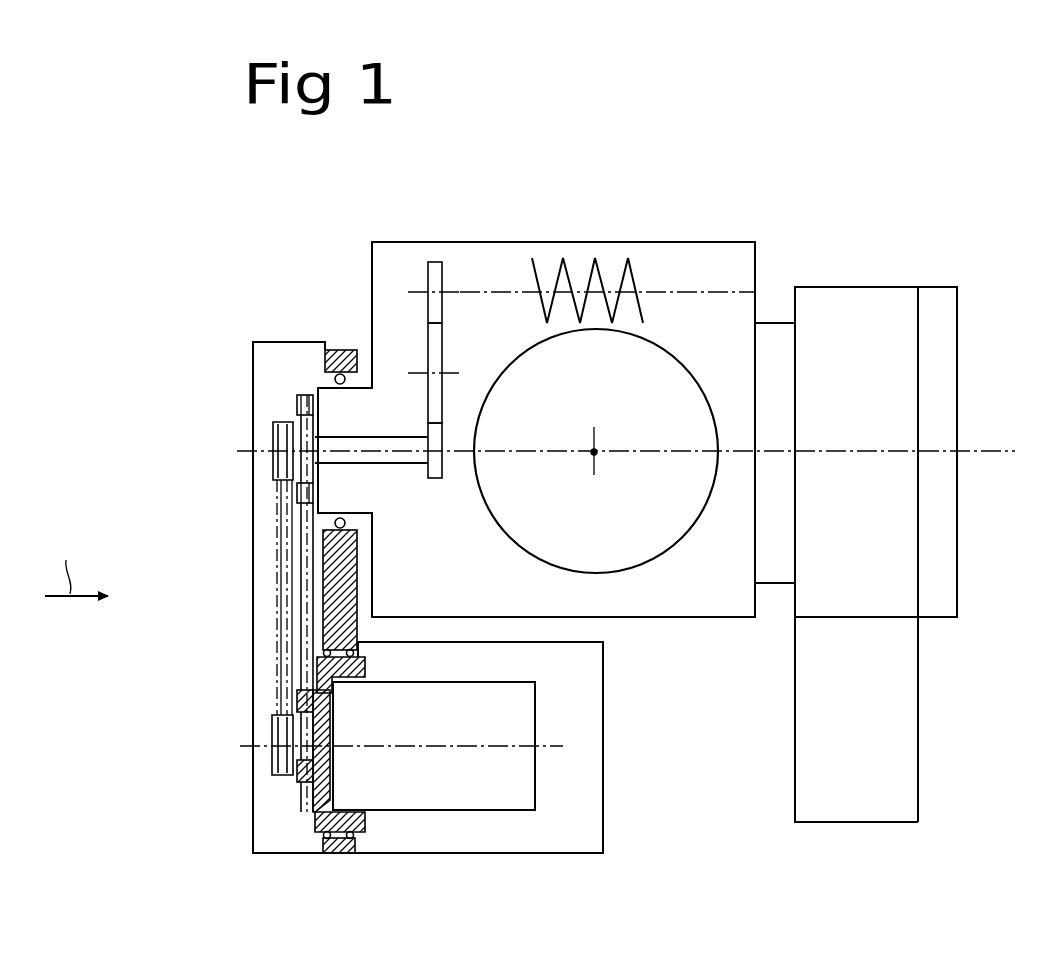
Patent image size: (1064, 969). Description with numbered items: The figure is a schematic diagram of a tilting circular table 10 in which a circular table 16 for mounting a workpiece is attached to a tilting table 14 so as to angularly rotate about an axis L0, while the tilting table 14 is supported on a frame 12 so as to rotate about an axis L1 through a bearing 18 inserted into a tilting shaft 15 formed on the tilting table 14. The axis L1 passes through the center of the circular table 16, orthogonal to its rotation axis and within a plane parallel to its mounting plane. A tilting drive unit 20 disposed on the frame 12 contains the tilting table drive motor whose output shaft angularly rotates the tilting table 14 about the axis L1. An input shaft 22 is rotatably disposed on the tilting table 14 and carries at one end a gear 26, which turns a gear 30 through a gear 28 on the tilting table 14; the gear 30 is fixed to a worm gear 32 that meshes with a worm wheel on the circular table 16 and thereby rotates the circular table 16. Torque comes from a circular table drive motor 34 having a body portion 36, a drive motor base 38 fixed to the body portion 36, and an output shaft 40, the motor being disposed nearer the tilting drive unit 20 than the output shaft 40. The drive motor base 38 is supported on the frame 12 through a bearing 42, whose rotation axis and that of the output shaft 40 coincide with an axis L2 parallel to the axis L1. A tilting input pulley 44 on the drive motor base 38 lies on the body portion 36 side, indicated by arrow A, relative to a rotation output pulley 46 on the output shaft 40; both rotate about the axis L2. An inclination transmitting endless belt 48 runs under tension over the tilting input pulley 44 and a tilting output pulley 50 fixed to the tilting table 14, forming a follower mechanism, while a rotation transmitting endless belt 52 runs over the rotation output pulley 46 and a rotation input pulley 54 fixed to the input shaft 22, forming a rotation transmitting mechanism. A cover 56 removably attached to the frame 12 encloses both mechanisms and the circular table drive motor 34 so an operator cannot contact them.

The tilting circular table 10 is at (543, 188).
The frame 12 is at (337, 349).
The tilting table 14 is at (711, 619).
The tilting shaft 15 is at (297, 407).
The circular table 16 is at (672, 350).
The bearing 18 is at (334, 378).
The tilting drive unit 20 is at (858, 287).
The input shaft 22 is at (395, 466).
The gear 26 is at (437, 480).
The gear 28 is at (441, 343).
The gear 30 is at (434, 262).
The worm gear 32 is at (600, 256).
The circular table drive motor 34 is at (428, 814).
The body portion 36 is at (497, 800).
The drive motor base 38 is at (310, 810).
The output shaft 40 is at (272, 737).
The bearing 42 is at (333, 856).
The tilting input pulley 44 is at (297, 790).
The rotation output pulley 46 is at (273, 757).
The inclination transmitting endless belt 48 is at (285, 612).
The tilting output pulley 50 is at (297, 497).
The rotation transmitting endless belt 52 is at (280, 635).
The rotation input pulley 54 is at (273, 463).
The cover 56 is at (253, 556).
The axis L0 is at (597, 456).
The axis L1 is at (983, 451).
The axis L2 is at (553, 749).
The arrow A is at (76, 556).